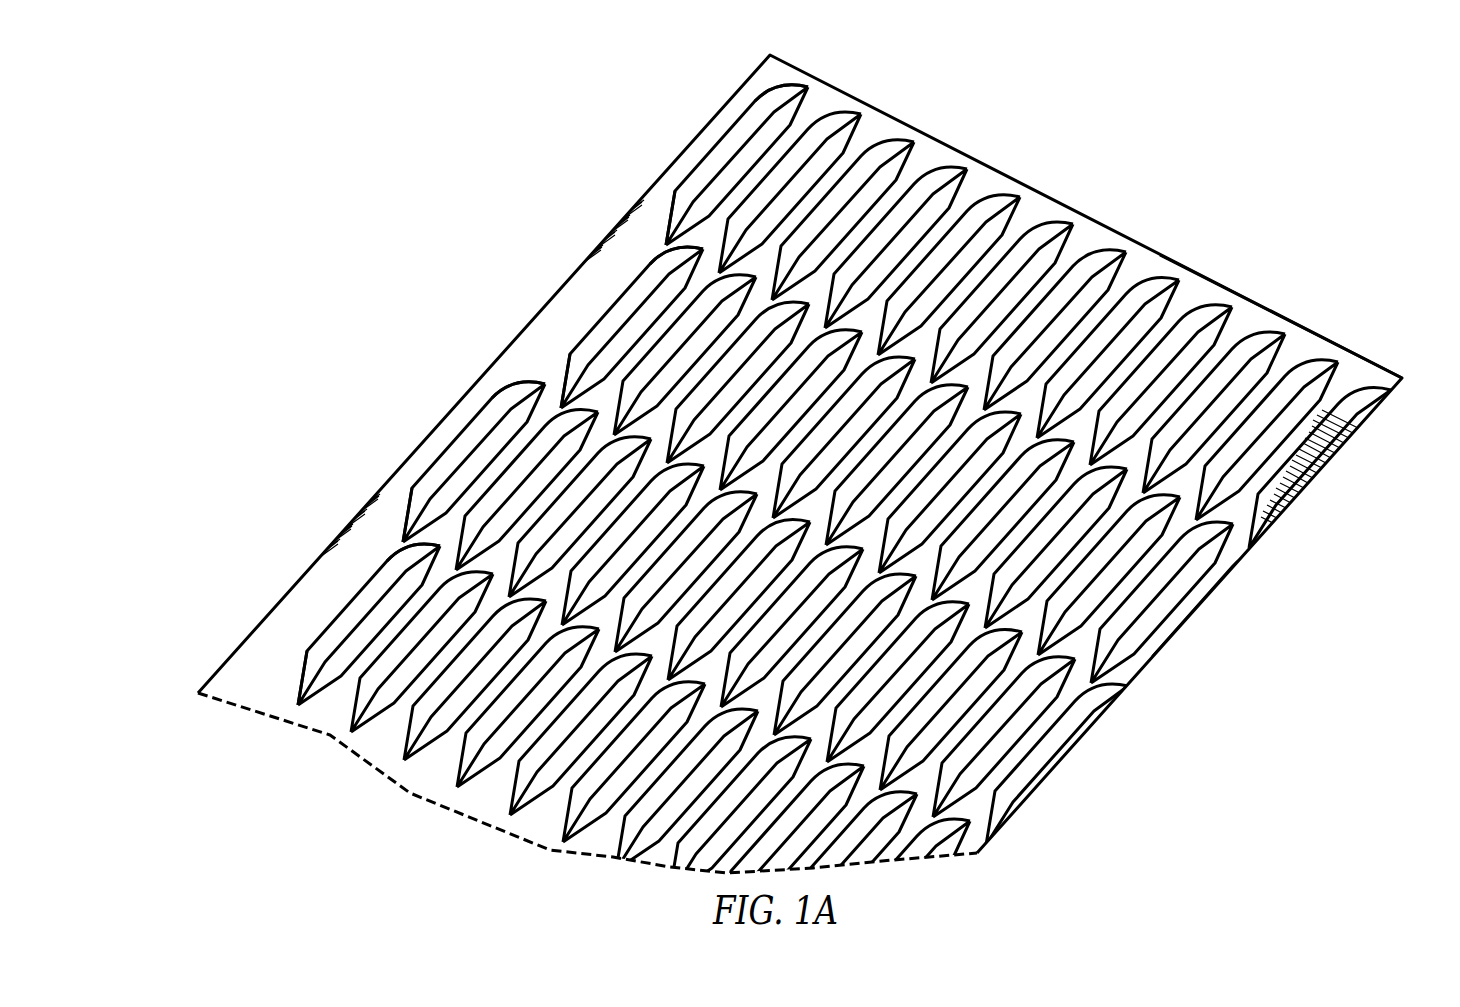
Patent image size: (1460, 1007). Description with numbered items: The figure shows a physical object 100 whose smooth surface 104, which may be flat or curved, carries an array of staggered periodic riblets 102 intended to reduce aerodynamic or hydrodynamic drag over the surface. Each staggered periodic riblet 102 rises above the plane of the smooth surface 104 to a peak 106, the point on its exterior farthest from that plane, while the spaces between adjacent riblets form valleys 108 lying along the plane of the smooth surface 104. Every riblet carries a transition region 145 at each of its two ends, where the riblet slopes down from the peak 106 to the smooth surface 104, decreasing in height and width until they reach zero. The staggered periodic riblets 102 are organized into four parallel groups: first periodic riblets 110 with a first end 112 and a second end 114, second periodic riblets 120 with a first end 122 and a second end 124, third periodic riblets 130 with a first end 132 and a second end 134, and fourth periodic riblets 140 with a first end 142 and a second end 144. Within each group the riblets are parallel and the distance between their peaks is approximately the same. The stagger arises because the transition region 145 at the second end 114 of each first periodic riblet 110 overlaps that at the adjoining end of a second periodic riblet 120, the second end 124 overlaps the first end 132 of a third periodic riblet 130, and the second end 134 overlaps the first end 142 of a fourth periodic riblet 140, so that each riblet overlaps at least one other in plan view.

The physical object 100 is at (1305, 531).
The staggered periodic riblets 102 is at (1000, 222).
The smooth surface 104 is at (1191, 290).
The peak 106 is at (893, 197).
The valley 108 is at (907, 188).
The first periodic riblets 110 is at (316, 624).
The first end 112 is at (307, 676).
The second end 114 is at (400, 562).
The second periodic riblets 120 is at (446, 441).
The first end 122 is at (401, 517).
The second end 124 is at (517, 394).
The third periodic riblets 130 is at (584, 328).
The first end 132 is at (577, 369).
The second end 134 is at (672, 265).
The fourth periodic riblets 140 is at (692, 163).
The first end 142 is at (640, 213).
The second end 144 is at (774, 98).
The transition region 145 is at (1100, 662).